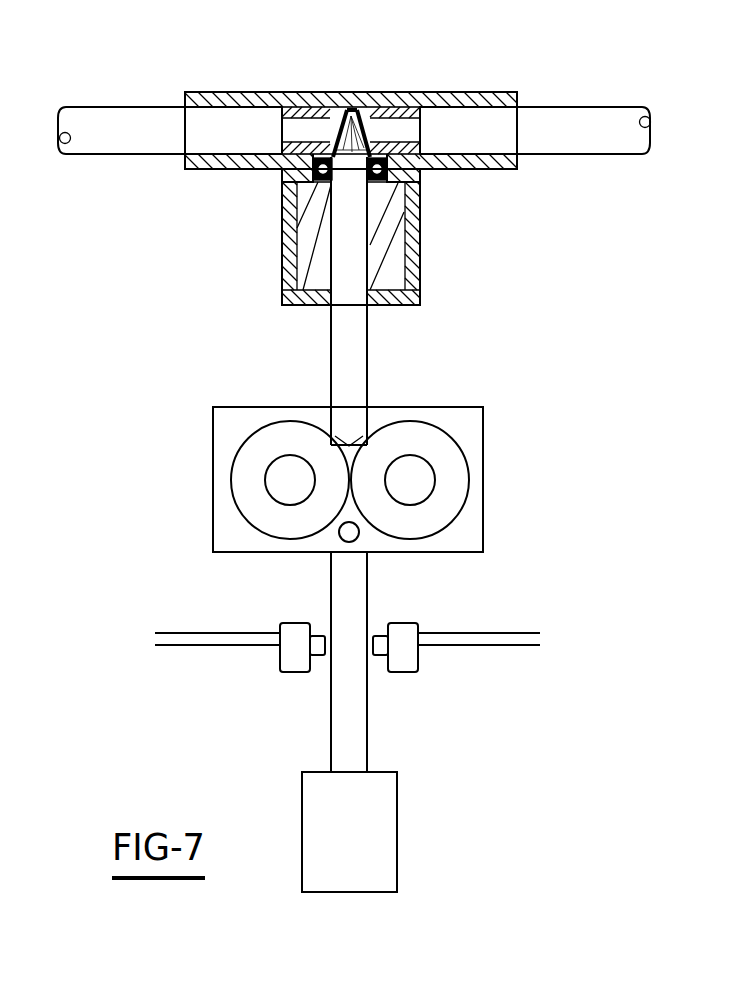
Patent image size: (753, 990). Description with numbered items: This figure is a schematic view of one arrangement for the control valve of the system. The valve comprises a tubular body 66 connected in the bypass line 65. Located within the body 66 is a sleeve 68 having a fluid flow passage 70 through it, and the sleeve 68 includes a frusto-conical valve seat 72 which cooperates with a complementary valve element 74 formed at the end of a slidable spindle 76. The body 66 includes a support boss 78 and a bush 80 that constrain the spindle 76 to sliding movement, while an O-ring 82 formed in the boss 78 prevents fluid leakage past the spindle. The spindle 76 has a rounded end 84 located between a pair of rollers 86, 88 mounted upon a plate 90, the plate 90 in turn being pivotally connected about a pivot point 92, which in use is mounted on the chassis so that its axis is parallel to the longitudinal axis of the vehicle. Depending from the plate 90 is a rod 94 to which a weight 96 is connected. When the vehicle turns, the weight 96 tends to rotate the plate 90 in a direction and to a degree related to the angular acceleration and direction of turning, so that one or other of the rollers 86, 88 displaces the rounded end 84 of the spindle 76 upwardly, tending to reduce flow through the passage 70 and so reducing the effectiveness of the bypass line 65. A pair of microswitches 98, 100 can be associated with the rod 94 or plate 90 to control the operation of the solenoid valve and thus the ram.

The bypass line 65 is at (580, 132).
The tubular body 66 is at (236, 90).
The sleeve 68 is at (304, 120).
The fluid flow passage 70 is at (318, 112).
The frusto-conical valve seat 72 is at (366, 120).
The valve element 74 is at (372, 150).
The spindle 76 is at (350, 353).
The support boss 78 is at (410, 287).
The bush 80 is at (380, 235).
The O-ring 82 is at (382, 182).
The rounded end 84 is at (343, 430).
The roller 86 is at (240, 482).
The roller 88 is at (453, 473).
The plate 90 is at (467, 530).
The pivot point 92 is at (355, 535).
The rod 94 is at (350, 725).
The weight 96 is at (377, 825).
The microswitch 98 is at (297, 663).
The microswitch 100 is at (408, 660).